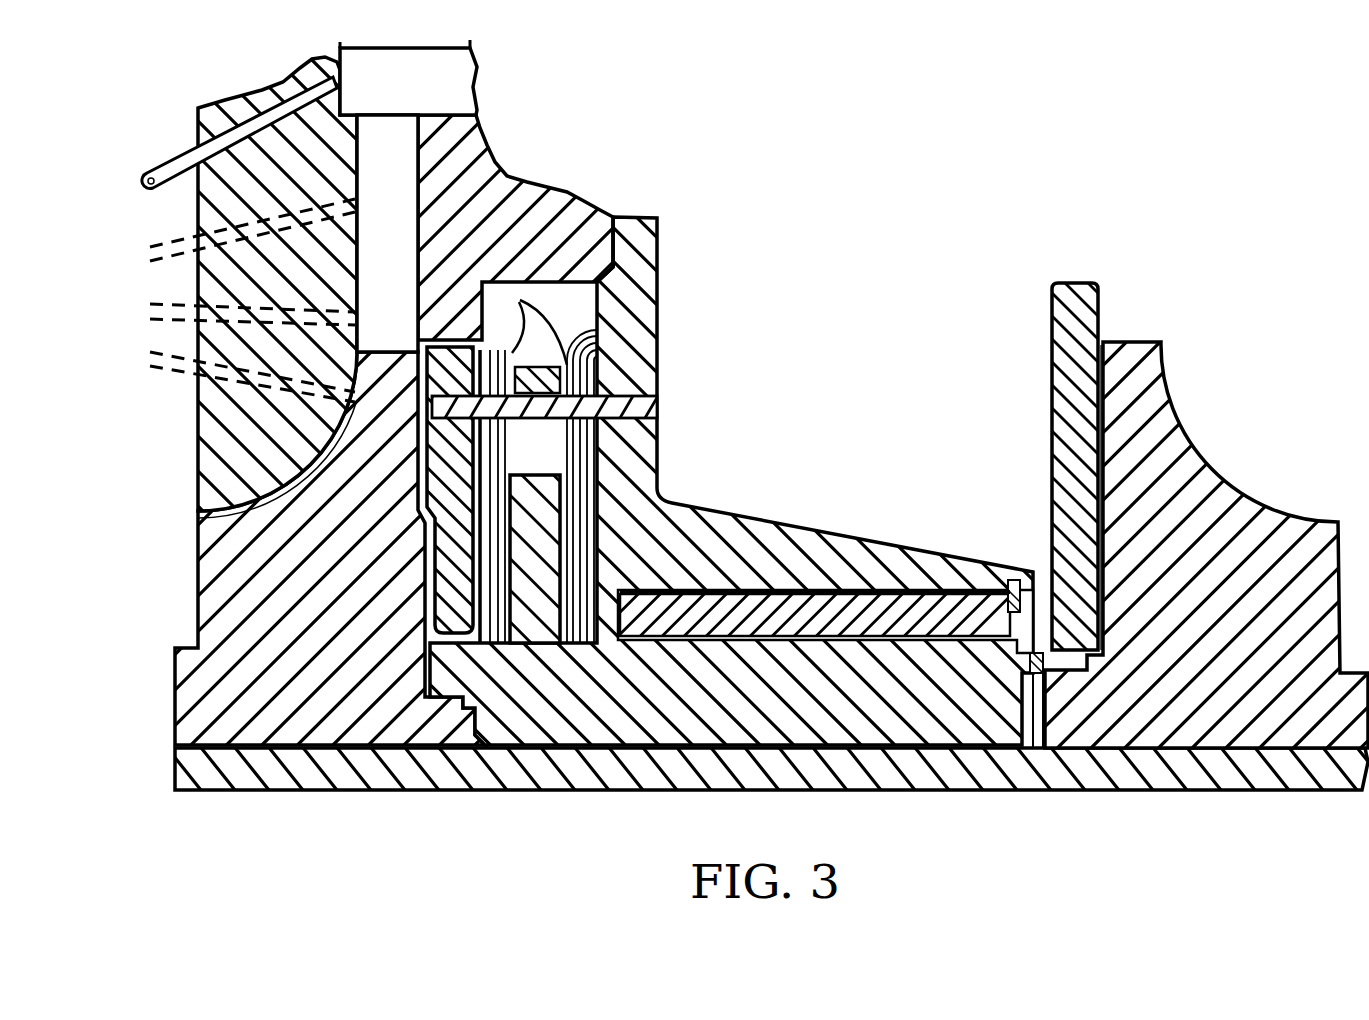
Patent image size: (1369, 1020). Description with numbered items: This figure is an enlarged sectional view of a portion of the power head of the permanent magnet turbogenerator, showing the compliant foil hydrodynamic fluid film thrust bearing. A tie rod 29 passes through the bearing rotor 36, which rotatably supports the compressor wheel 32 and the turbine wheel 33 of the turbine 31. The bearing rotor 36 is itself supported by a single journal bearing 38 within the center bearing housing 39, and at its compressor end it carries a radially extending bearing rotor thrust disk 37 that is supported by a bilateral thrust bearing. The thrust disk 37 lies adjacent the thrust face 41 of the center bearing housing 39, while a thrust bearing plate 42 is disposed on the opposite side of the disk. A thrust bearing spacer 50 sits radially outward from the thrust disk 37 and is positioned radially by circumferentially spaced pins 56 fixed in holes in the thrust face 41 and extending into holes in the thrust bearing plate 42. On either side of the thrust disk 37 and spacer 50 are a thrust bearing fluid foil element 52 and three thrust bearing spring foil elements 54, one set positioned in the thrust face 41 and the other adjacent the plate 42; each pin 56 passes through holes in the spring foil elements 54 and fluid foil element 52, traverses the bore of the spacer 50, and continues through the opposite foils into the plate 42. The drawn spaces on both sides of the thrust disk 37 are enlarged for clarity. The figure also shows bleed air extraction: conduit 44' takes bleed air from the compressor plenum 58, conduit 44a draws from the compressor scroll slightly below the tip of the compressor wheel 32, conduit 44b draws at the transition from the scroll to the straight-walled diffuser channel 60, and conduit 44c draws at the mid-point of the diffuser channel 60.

The tie rod 29 is at (945, 793).
The turbine 31 is at (1240, 425).
The compressor wheel 32 is at (197, 538).
The turbine wheel 33 is at (1250, 500).
The bearing rotor 36 is at (893, 591).
The bearing rotor thrust disk 37 is at (518, 476).
The journal bearing 38 is at (803, 597).
The center bearing housing 39 is at (775, 512).
The thrust face 41 is at (592, 291).
The thrust bearing plate 42 is at (440, 337).
The conduit 44' is at (206, 133).
The conduit 44a is at (165, 350).
The conduit 44b is at (170, 305).
The conduit 44c is at (173, 240).
The thrust bearing spacer 50 is at (513, 358).
The thrust bearing fluid foil element 52 is at (504, 320).
The thrust bearing spring foil elements 54 is at (590, 347).
The pins 56 is at (657, 411).
The compressor plenum 58 is at (392, 48).
The diffuser channel 60 is at (403, 182).